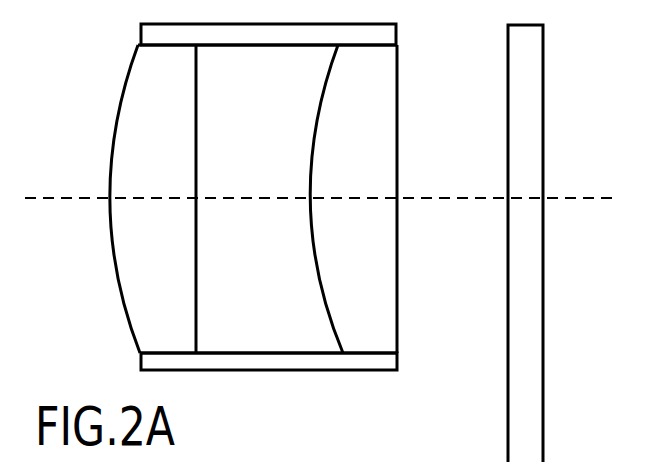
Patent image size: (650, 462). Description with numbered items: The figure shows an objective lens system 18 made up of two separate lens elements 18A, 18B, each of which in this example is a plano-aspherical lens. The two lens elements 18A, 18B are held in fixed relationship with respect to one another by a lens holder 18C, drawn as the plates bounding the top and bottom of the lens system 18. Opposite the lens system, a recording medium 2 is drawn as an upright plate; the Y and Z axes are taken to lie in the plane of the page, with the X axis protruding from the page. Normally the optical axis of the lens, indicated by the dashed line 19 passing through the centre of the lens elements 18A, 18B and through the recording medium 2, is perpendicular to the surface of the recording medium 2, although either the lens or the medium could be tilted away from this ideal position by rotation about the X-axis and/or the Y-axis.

The recording medium 2 is at (545, 84).
The objective lens system 18 is at (255, 217).
The lens element 18A is at (370, 272).
The lens element 18B is at (147, 116).
The lens holder 18C is at (370, 38).
The optical axis 19 is at (316, 212).